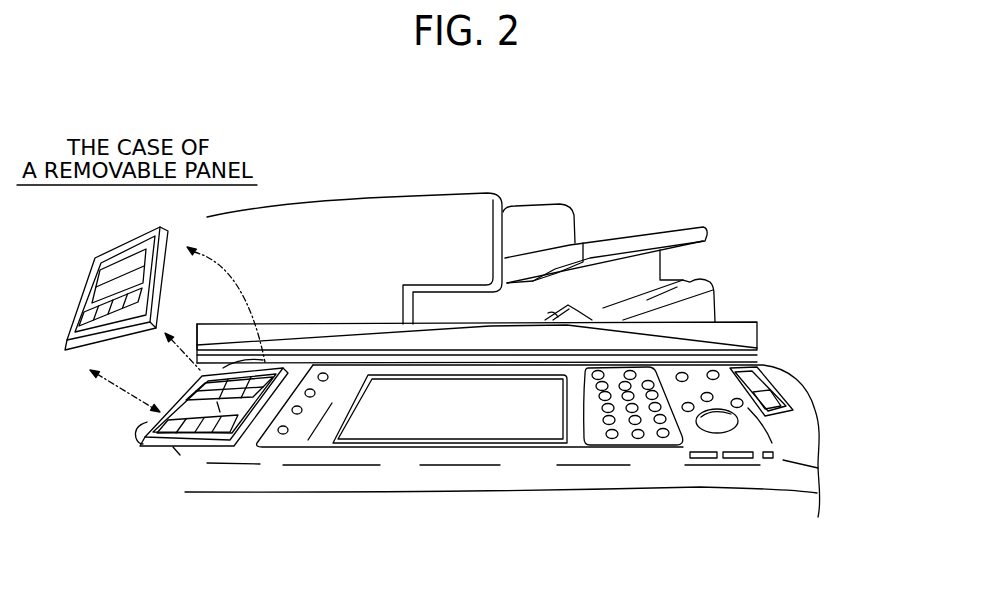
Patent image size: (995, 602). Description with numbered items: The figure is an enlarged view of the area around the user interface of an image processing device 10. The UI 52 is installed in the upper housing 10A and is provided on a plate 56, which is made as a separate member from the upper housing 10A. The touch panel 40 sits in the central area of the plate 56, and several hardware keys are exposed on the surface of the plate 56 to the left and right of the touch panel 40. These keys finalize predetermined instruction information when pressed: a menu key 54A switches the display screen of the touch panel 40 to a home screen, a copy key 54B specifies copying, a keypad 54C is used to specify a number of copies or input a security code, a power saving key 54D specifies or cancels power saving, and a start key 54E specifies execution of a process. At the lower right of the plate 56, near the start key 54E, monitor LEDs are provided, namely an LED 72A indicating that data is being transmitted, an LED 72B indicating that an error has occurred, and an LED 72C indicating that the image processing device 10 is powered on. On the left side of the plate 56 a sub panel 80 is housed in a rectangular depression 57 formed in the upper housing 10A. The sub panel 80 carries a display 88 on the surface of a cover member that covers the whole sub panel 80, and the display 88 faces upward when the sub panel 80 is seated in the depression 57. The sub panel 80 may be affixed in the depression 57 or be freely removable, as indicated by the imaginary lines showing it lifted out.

The image processing device 10 is at (347, 177).
The upper housing 10A is at (220, 480).
The touch panel 40 is at (412, 430).
The UI 52 is at (460, 456).
The menu key 54A is at (323, 372).
The copy key 54B is at (318, 391).
The keypad 54C is at (622, 450).
The power saving key 54D is at (716, 373).
The start key 54E is at (736, 416).
The plate 56 is at (303, 437).
The rectangular depression 57 is at (146, 426).
The LED 72A is at (708, 458).
The LED 72B is at (747, 458).
The LED 72C is at (775, 454).
The sub panel 80 is at (152, 400).
The display 88 is at (198, 396).